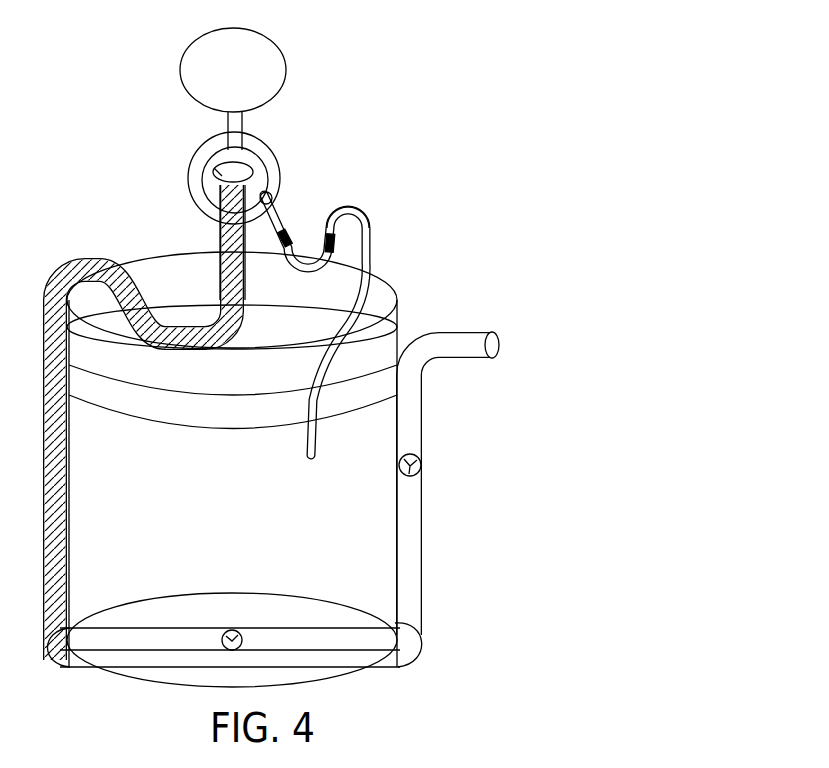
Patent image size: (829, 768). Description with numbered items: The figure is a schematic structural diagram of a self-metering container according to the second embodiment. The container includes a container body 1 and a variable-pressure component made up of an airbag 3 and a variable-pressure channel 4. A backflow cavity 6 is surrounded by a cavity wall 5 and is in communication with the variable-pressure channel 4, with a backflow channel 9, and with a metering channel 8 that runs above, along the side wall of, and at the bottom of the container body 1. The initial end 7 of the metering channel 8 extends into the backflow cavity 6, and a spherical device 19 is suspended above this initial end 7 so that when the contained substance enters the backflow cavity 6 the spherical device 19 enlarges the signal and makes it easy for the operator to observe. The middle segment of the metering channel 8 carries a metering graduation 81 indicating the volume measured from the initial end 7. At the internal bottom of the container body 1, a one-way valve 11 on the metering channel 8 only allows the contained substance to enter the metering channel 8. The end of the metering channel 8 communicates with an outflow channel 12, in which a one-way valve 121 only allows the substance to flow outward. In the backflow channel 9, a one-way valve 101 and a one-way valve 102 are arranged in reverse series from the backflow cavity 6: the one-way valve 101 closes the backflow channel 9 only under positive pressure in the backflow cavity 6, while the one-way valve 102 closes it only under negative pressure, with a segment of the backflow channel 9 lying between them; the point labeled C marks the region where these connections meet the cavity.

The container body 1 is at (367, 590).
The airbag 3 is at (282, 62).
The variable-pressure channel 4 is at (218, 128).
The cavity wall 5 is at (247, 177).
The backflow cavity 6 is at (280, 168).
The initial end 7 is at (215, 172).
The metering channel 8 is at (240, 288).
The backflow channel 9 is at (358, 240).
The one-way valve 11 is at (237, 630).
The outflow channel 12 is at (415, 530).
The spherical device 19 is at (226, 175).
The metering graduation 81 is at (220, 250).
The one-way valve 101 is at (295, 336).
The one-way valve 102 is at (347, 208).
The one-way valve 121 is at (420, 460).
The pipe joint C is at (266, 205).